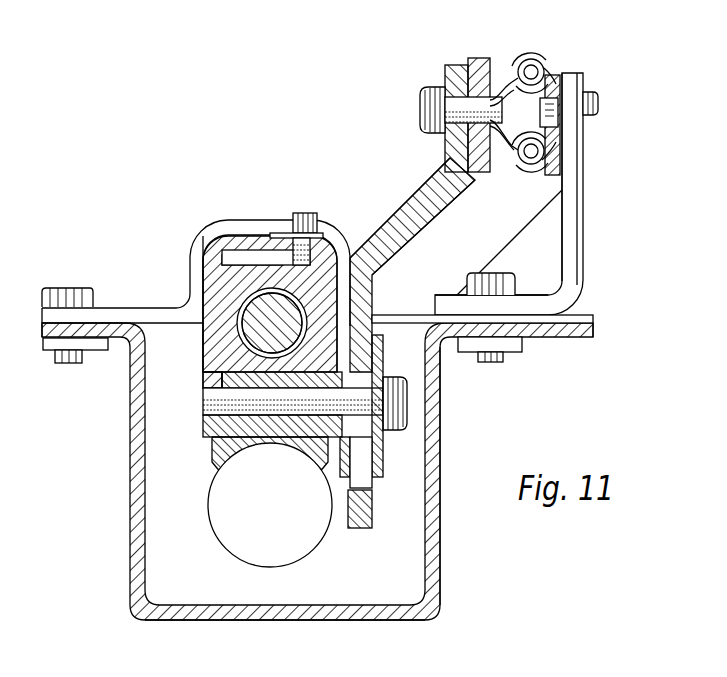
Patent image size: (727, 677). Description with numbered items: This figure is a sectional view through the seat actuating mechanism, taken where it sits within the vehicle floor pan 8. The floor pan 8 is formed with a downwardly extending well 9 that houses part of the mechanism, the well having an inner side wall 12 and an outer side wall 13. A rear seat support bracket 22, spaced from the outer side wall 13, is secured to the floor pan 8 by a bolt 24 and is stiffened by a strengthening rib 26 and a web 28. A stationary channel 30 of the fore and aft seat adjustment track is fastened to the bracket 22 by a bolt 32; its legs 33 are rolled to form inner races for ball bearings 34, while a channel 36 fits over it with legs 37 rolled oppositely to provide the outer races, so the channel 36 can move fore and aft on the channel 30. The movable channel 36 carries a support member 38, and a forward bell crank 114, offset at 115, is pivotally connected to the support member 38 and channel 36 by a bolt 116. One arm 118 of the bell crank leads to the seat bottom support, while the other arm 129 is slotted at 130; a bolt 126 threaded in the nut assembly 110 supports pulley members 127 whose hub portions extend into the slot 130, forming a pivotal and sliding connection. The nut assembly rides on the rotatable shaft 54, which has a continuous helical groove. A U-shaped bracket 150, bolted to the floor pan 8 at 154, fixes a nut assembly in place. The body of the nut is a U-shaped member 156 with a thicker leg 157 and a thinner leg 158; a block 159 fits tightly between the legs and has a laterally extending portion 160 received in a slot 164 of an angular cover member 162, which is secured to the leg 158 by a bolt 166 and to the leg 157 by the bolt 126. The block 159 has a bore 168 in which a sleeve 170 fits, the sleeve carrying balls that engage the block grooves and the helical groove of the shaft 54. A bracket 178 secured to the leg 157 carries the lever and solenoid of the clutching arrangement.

The vehicle floor pan 8 is at (38, 328).
The well 9 is at (285, 622).
The inner side wall 12 is at (128, 487).
The outer side wall 13 is at (432, 577).
The rear seat support bracket 22 is at (563, 190).
The bolt 24 is at (497, 364).
The strengthening rib 26 is at (576, 218).
The web 28 is at (543, 255).
The channel 30 is at (556, 72).
The bolt 32 is at (598, 104).
The leg of channel 33 is at (540, 108).
The ball bearing 34 is at (548, 68).
The channel 36 is at (497, 66).
The leg of channel 37 is at (533, 54).
The support member 38 is at (477, 58).
The rotatable shaft 54 is at (247, 327).
The nut assembly 110 is at (341, 241).
The forward bell crank 114 is at (449, 63).
The offset 115 is at (428, 212).
The bolt 116 is at (420, 91).
The arm of bell crank 118 is at (233, 562).
The bolt 126 is at (407, 403).
The pulley member 127 is at (383, 435).
The other arm of bell crank 129 is at (358, 528).
The slot 130 is at (372, 482).
The U-shaped bracket 150 is at (192, 230).
The bolt connection to floor pan 154 is at (70, 288).
The U-shaped member 156 is at (336, 303).
The thicker leg 157 is at (224, 446).
The thinner leg 158 is at (262, 247).
The block 159 is at (242, 268).
The laterally extending portion 160 is at (207, 352).
The angular cover member 162 is at (212, 256).
The slot 164 is at (205, 380).
The bolt 166 is at (308, 218).
The bore 168 is at (238, 318).
The sleeve 170 is at (250, 300).
The bracket 178 is at (218, 458).